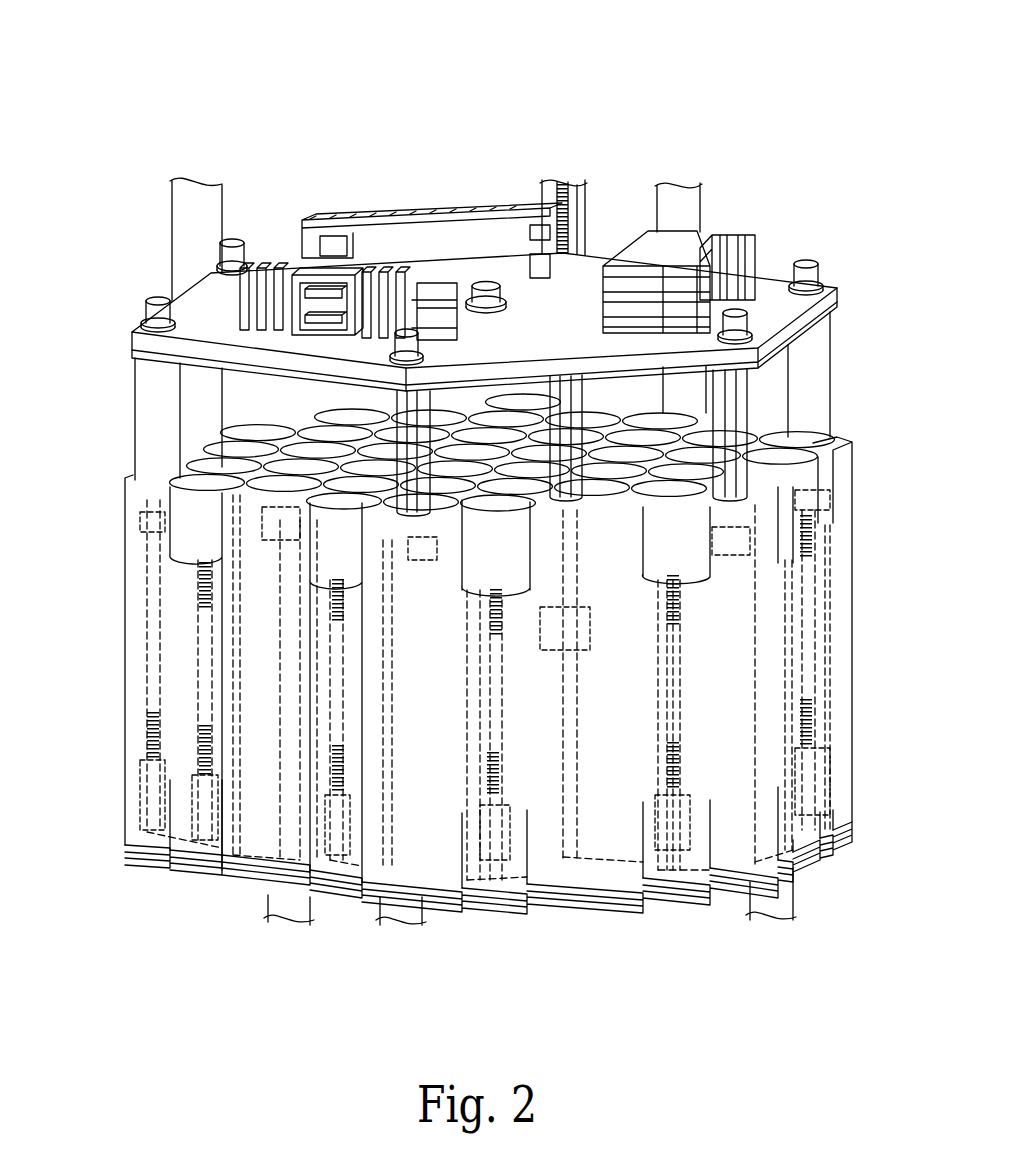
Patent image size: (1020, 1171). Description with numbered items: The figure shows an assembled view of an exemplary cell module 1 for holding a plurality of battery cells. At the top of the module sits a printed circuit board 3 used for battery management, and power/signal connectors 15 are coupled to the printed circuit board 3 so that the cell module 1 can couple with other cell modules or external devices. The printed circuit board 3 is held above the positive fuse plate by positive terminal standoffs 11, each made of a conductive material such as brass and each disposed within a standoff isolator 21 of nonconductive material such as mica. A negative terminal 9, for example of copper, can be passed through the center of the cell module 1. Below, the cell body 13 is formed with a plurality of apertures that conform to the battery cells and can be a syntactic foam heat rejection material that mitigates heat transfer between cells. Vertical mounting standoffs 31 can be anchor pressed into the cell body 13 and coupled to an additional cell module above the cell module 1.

The cell module 1 is at (698, 68).
The printed circuit board 3 is at (838, 297).
The negative terminal 9 is at (486, 286).
The positive terminal standoff 11 is at (740, 457).
The cell body 13 is at (125, 752).
The power/signal connectors 15 is at (628, 248).
The standoff isolator 21 is at (222, 412).
The vertical mounting standoff 31 is at (615, 290).